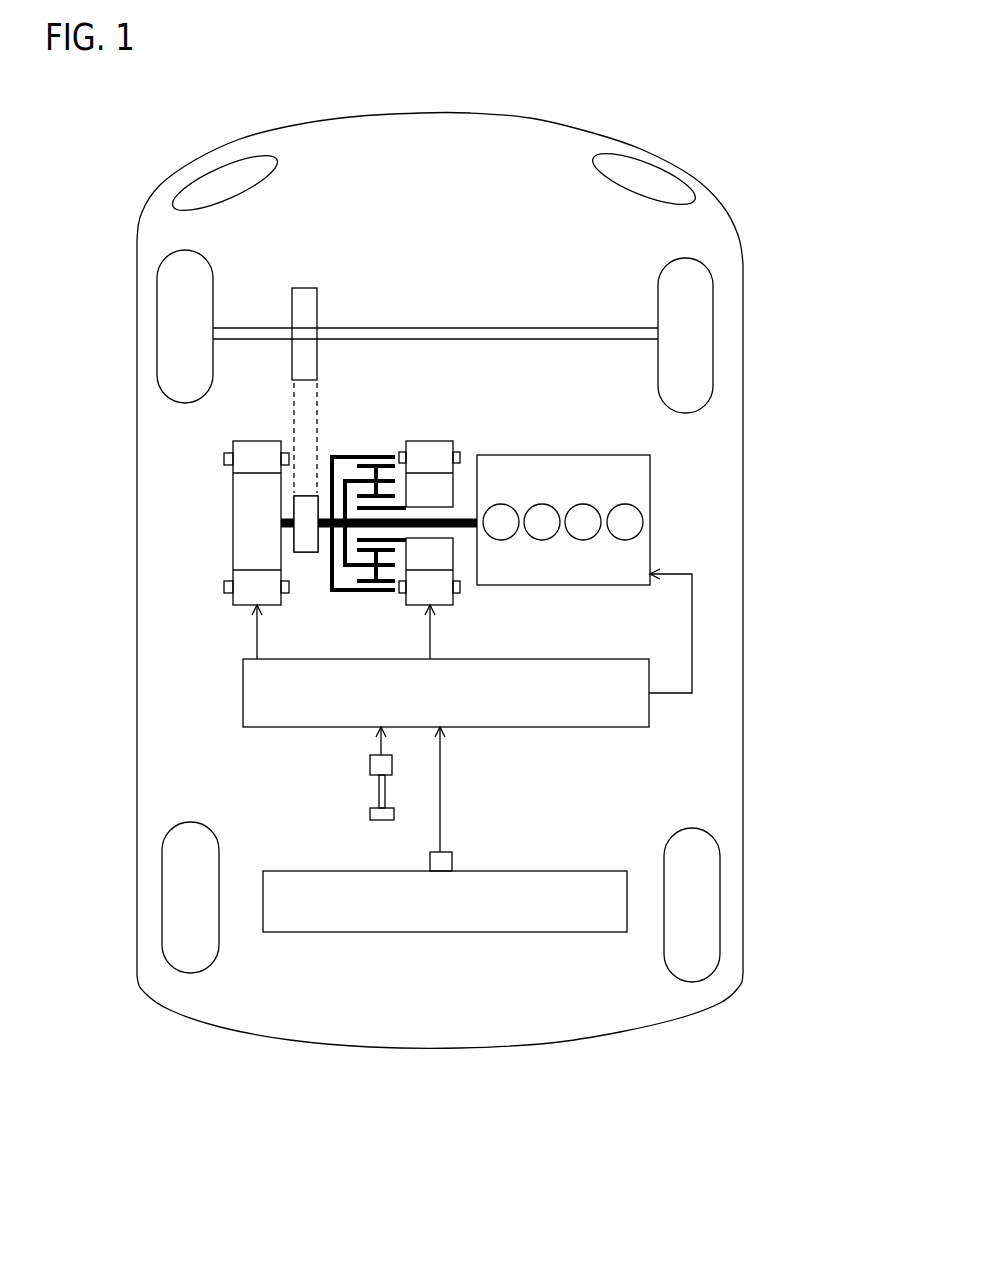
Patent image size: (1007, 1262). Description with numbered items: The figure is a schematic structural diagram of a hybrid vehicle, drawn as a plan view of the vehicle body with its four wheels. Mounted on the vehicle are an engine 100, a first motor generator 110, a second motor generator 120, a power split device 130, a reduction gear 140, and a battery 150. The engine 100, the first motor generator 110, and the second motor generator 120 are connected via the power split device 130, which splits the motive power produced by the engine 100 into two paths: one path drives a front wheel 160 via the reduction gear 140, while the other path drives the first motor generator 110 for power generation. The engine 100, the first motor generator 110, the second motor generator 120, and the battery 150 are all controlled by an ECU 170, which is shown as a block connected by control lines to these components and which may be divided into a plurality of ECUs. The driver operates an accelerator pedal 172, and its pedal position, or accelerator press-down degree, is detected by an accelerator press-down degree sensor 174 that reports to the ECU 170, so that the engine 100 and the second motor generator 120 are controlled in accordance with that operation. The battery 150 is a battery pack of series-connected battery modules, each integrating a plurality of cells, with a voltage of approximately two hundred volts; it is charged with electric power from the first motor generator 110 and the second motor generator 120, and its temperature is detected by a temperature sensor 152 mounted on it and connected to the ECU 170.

The engine 100 is at (513, 453).
The first motor generator 110 is at (433, 440).
The second motor generator 120 is at (233, 523).
The power split device 130 is at (363, 453).
The reduction gear 140 is at (305, 268).
The battery 150 is at (412, 932).
The temperature sensor 152 is at (452, 860).
The front wheel 160 is at (155, 340).
The ECU 170 is at (243, 698).
The accelerator pedal 172 is at (370, 805).
The accelerator press-down degree sensor 174 is at (370, 765).